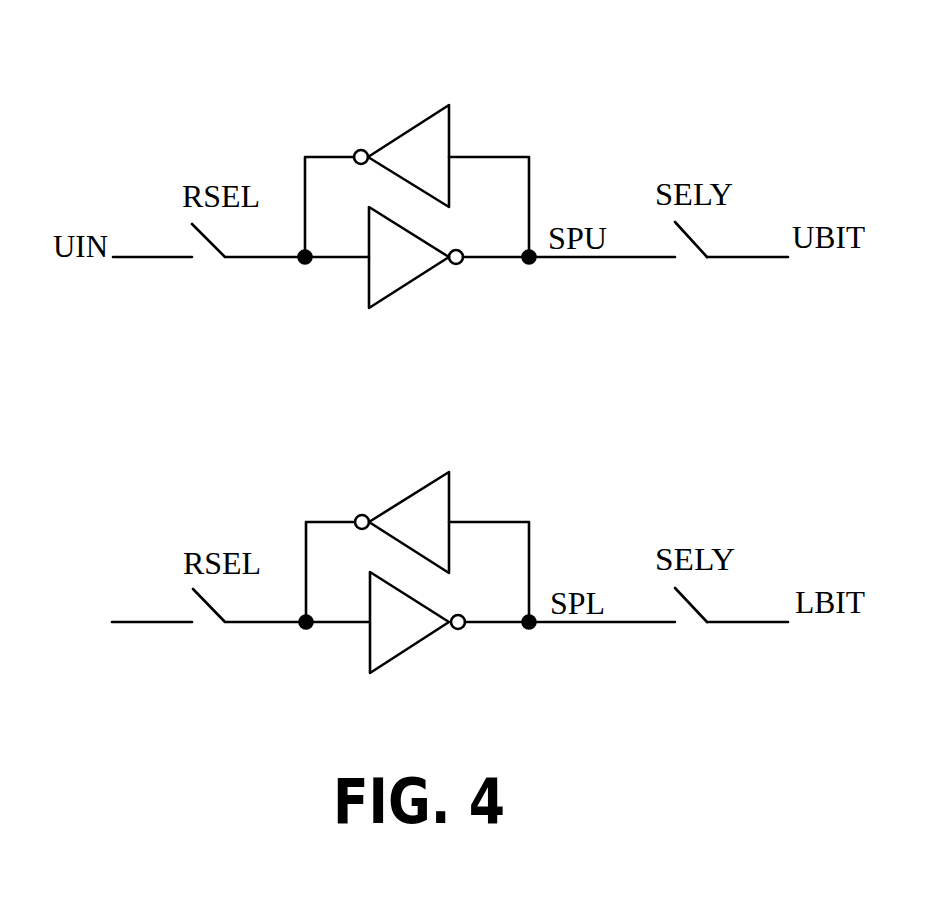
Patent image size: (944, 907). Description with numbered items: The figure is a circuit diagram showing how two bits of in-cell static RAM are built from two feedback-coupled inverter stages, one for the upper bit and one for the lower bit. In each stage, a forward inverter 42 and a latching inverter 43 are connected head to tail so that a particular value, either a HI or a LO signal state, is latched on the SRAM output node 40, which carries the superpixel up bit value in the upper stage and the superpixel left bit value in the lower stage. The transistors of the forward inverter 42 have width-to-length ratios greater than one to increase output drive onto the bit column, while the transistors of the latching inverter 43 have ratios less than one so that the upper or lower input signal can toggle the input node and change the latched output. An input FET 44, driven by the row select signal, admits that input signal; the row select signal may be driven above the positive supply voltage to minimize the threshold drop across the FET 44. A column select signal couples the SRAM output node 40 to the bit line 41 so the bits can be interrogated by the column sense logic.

The SRAM output node 40 is at (633, 622).
The bit line 41 is at (763, 622).
The forward inverter 42 is at (371, 288).
The latching inverter 43 is at (400, 134).
The FET 44 is at (203, 630).